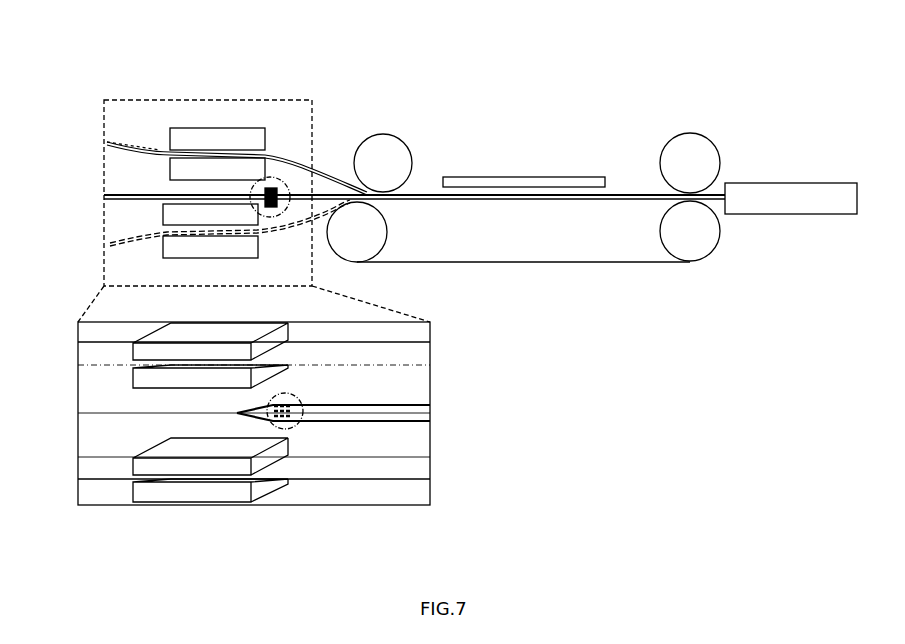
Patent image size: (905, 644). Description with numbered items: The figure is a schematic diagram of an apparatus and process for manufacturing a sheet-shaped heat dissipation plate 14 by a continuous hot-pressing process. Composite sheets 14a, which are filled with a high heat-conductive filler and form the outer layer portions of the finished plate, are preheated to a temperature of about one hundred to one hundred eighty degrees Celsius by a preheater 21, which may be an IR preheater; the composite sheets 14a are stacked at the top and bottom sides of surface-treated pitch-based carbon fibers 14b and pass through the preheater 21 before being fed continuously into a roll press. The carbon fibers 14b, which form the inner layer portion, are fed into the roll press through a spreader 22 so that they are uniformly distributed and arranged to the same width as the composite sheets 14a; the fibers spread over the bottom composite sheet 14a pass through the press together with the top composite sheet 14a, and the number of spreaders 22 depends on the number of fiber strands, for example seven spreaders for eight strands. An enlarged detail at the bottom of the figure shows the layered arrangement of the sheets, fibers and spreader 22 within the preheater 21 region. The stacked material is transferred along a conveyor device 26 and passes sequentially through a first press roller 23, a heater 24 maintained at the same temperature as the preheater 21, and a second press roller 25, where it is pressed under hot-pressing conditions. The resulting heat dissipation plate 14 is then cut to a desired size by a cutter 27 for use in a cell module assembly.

The heat dissipation plate 14 is at (483, 200).
The composite sheets 14a is at (318, 182).
The surface-treated pitch-based carbon fibers 14b is at (125, 196).
The preheater 21 is at (212, 167).
The spreader 22 is at (275, 178).
The first press roller 23 is at (404, 142).
The heater 24 is at (540, 176).
The second press roller 25 is at (683, 137).
The conveyor device 26 is at (594, 240).
The cutter 27 is at (797, 216).